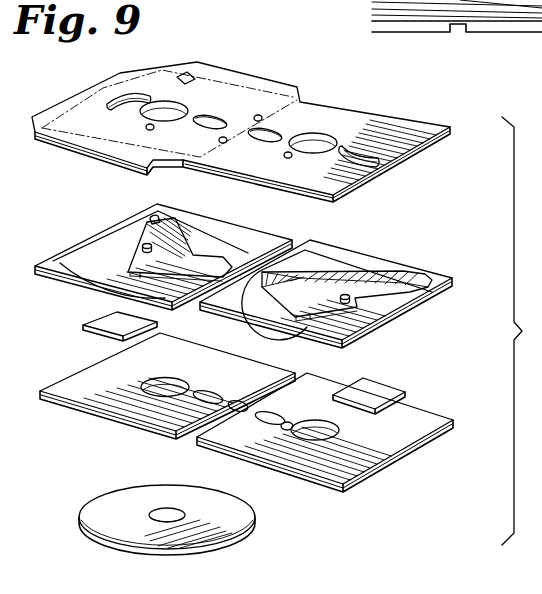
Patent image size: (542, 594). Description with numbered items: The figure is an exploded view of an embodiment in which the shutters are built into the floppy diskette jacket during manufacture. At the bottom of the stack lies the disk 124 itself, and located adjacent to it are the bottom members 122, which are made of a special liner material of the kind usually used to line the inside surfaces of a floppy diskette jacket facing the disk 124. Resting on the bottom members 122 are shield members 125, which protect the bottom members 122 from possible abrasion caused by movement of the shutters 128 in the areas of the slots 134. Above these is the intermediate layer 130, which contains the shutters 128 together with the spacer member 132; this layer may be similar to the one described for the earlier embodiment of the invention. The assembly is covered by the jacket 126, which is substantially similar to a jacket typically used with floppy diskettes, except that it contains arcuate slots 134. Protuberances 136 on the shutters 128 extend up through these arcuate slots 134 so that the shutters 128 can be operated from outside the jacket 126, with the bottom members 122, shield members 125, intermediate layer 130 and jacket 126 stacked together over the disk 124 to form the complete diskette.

The bottom members 122 is at (92, 418).
The disk 124 is at (255, 526).
The shield members 125 is at (106, 318).
The jacket 126 is at (301, 100).
The shutters 128 is at (213, 262).
The intermediate layer 130 is at (248, 273).
The spacer member 132 is at (60, 262).
The arcuate slots 134 is at (118, 102).
The protuberances 136 is at (146, 243).